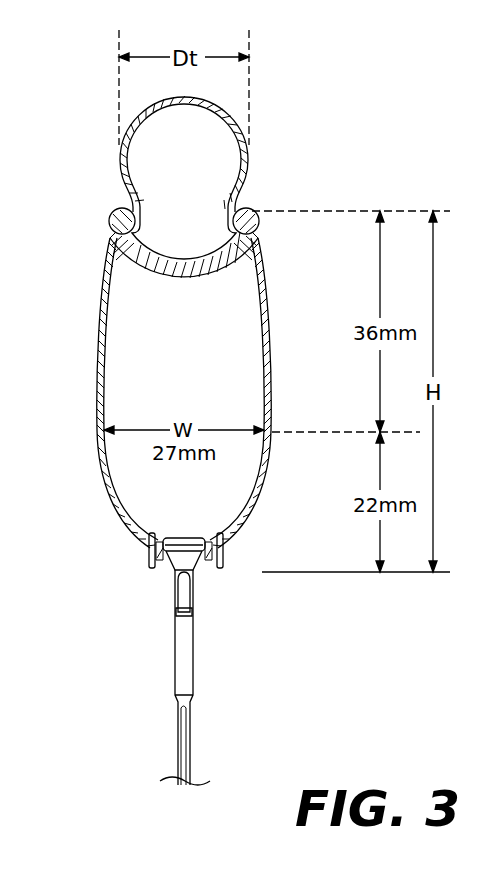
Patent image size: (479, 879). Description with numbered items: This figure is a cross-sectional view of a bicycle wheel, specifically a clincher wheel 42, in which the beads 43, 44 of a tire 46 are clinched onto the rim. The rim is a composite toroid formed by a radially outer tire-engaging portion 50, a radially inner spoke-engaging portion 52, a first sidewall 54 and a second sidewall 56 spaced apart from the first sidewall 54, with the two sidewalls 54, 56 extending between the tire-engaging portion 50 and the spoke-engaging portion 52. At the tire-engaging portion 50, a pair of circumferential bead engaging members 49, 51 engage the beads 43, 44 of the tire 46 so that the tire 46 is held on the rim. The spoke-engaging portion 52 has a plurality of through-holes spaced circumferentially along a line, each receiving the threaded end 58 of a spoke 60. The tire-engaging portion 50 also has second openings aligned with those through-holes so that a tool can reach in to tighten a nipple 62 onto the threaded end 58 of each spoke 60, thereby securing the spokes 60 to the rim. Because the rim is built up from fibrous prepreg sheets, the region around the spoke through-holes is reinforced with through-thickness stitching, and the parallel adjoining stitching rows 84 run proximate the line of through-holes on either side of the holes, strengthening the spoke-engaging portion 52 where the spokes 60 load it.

The clincher wheel 42 is at (86, 446).
The bead 43 is at (115, 233).
The bead 44 is at (262, 247).
The tire 46 is at (240, 190).
The bead engaging member 49 is at (114, 216).
The tire-engaging portion 50 is at (108, 198).
The bead engaging member 51 is at (262, 224).
The spoke-engaging portion 52 is at (164, 582).
The first sidewall 54 is at (98, 351).
The second sidewall 56 is at (268, 355).
The threaded end 58 is at (188, 600).
The spoke 60 is at (186, 665).
The nipple 62 is at (160, 570).
The stitching row 84 is at (150, 558).